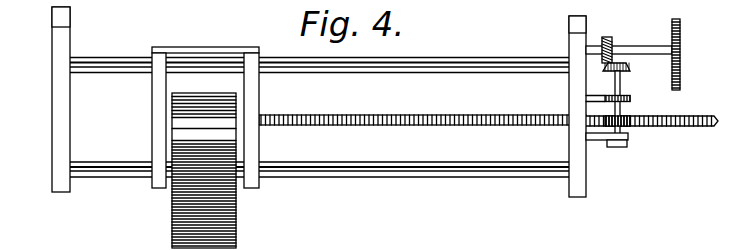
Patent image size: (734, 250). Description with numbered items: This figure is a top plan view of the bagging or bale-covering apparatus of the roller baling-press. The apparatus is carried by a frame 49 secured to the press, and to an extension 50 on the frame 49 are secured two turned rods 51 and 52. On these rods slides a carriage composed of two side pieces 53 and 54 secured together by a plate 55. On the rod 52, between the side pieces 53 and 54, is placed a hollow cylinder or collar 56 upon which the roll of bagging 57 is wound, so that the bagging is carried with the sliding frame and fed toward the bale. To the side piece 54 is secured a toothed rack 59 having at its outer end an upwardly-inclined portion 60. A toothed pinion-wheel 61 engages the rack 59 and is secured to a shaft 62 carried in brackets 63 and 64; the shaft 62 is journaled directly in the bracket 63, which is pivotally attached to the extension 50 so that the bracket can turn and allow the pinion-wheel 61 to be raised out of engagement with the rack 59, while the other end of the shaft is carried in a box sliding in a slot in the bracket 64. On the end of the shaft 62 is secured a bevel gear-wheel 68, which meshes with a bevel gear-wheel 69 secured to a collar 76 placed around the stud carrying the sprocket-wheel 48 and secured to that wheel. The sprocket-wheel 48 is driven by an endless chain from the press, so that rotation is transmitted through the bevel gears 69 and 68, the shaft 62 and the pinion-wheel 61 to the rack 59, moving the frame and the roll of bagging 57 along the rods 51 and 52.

The sprocket-wheel 48 is at (680, 31).
The frame 49 is at (70, 16).
The extension 50 is at (53, 105).
The turned rod 51 is at (494, 58).
The turned rod 52 is at (489, 178).
The side piece 53 is at (156, 118).
The side piece 54 is at (256, 83).
The plate 55 is at (212, 47).
The hollow cylinder or collar 56 is at (238, 182).
The roll of bagging 57 is at (236, 238).
The toothed rack 59 is at (419, 126).
The upwardly-inclined portion 60 is at (657, 136).
The toothed pinion-wheel 61 is at (628, 129).
The shaft 62 is at (621, 109).
The bracket 63 is at (631, 97).
The bracket 64 is at (622, 147).
The bevel gear-wheel 68 is at (631, 68).
The bevel gear-wheel 69 is at (608, 40).
The collar 76 is at (648, 46).